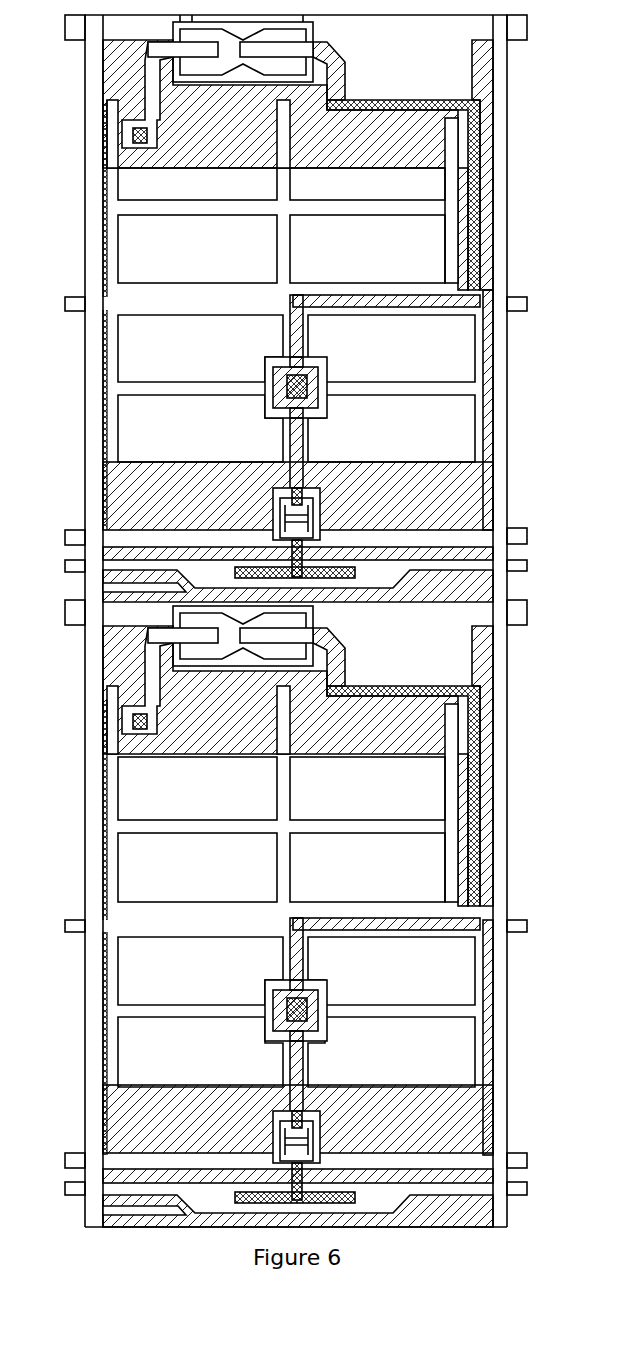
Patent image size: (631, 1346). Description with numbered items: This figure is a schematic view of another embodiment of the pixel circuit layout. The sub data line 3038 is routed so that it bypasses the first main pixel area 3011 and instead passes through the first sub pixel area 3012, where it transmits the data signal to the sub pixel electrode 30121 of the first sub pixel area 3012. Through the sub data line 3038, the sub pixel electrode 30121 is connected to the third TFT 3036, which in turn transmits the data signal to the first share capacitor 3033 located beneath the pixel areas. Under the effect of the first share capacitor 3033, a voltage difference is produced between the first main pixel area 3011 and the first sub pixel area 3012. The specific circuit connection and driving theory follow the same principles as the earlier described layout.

The sub data line 3038 is at (470, 143).
The first main pixel area 3011 is at (423, 257).
The first sub pixel area 3012 is at (448, 433).
The sub pixel electrode 30121 is at (290, 387).
The third TFT 3036 is at (278, 518).
The first share capacitor 3033 is at (340, 575).